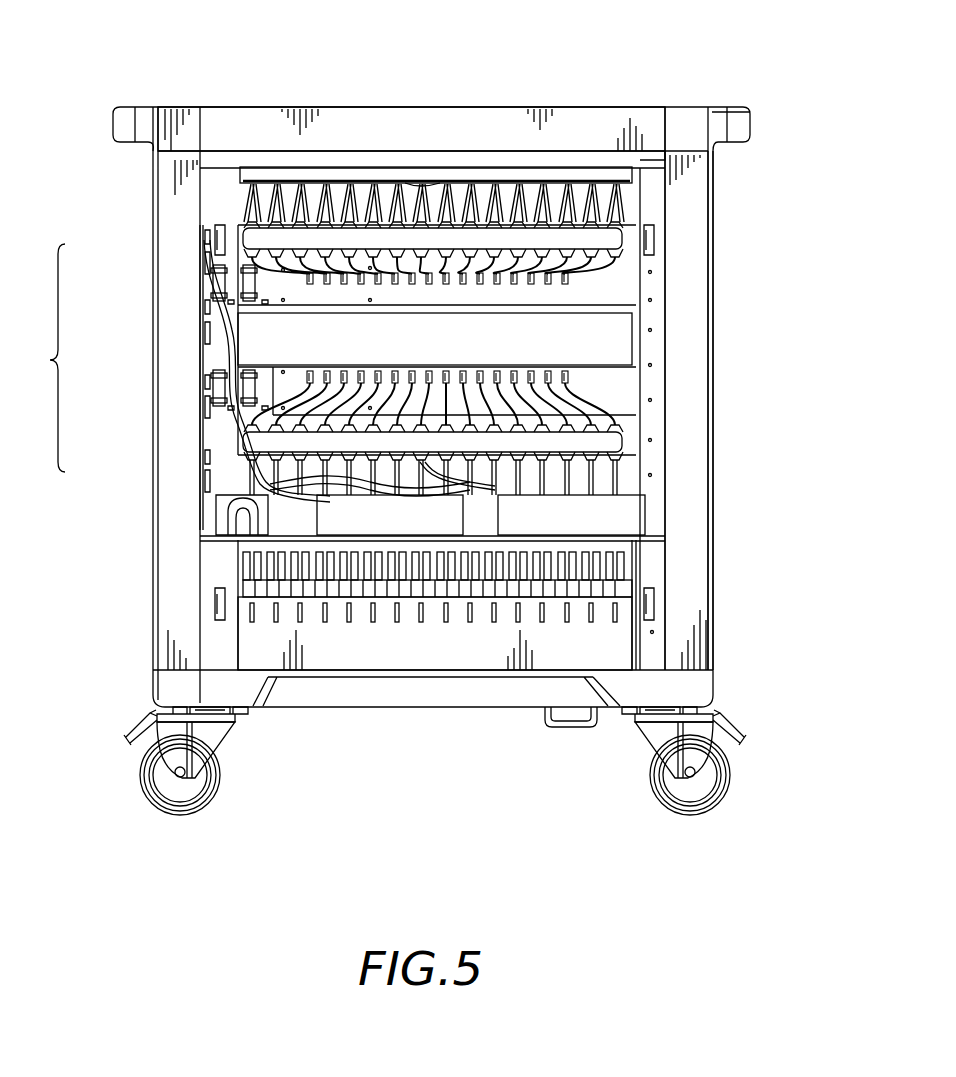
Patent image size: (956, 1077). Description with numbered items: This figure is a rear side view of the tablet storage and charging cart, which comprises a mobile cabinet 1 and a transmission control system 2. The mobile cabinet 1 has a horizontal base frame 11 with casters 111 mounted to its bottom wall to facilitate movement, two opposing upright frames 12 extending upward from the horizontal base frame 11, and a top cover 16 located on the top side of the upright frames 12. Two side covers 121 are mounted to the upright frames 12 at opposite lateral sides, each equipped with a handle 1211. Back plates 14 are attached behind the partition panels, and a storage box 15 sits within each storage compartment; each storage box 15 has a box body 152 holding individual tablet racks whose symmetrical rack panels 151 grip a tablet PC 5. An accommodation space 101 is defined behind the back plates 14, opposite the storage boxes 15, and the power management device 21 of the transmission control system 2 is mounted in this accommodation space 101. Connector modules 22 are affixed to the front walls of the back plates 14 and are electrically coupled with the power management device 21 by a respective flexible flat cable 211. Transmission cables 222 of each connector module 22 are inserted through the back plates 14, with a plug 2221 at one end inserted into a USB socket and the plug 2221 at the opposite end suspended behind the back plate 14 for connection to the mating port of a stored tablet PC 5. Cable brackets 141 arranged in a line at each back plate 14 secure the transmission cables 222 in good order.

The mobile cabinet 1 is at (660, 62).
The top cover 16 is at (578, 123).
The handle 1211 is at (742, 128).
The upright frame 12 is at (657, 198).
The side cover 121 is at (692, 260).
The back plate 14 is at (632, 405).
The cable bracket 141 is at (622, 428).
The storage box 15 is at (640, 572).
The rack panel 151 is at (625, 590).
The box body 152 is at (610, 645).
The accommodation space 101 is at (396, 648).
The horizontal base frame 11 is at (460, 690).
The caster 111 is at (700, 785).
The tablet PC 5 is at (245, 560).
The transmission control system 2 is at (49, 358).
The power management device 21 is at (290, 486).
The flexible flat cable 211 is at (235, 442).
The connector module 22 is at (258, 390).
The transmission cable 222 is at (250, 205).
The plug 2221 is at (300, 290).